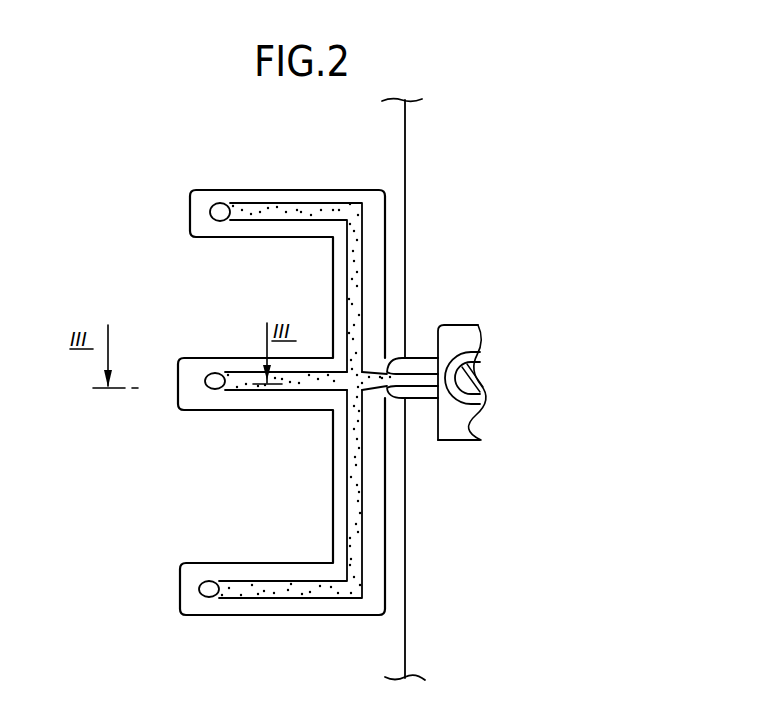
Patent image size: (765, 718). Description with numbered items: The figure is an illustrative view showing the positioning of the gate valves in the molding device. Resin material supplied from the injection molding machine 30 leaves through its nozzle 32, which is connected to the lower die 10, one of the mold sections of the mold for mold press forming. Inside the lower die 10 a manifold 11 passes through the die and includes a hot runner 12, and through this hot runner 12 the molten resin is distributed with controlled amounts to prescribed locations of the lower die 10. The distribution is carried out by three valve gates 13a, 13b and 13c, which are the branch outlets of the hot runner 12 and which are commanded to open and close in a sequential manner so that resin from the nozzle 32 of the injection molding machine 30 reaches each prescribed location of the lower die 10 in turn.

The lower die 10 is at (365, 139).
The manifold 11 is at (370, 270).
The hot runner 12 is at (352, 478).
The valve gate 13a is at (210, 212).
The valve gate 13b is at (214, 389).
The valve gate 13c is at (199, 588).
The injection molding machine 30 is at (455, 330).
The nozzle 32 is at (400, 389).